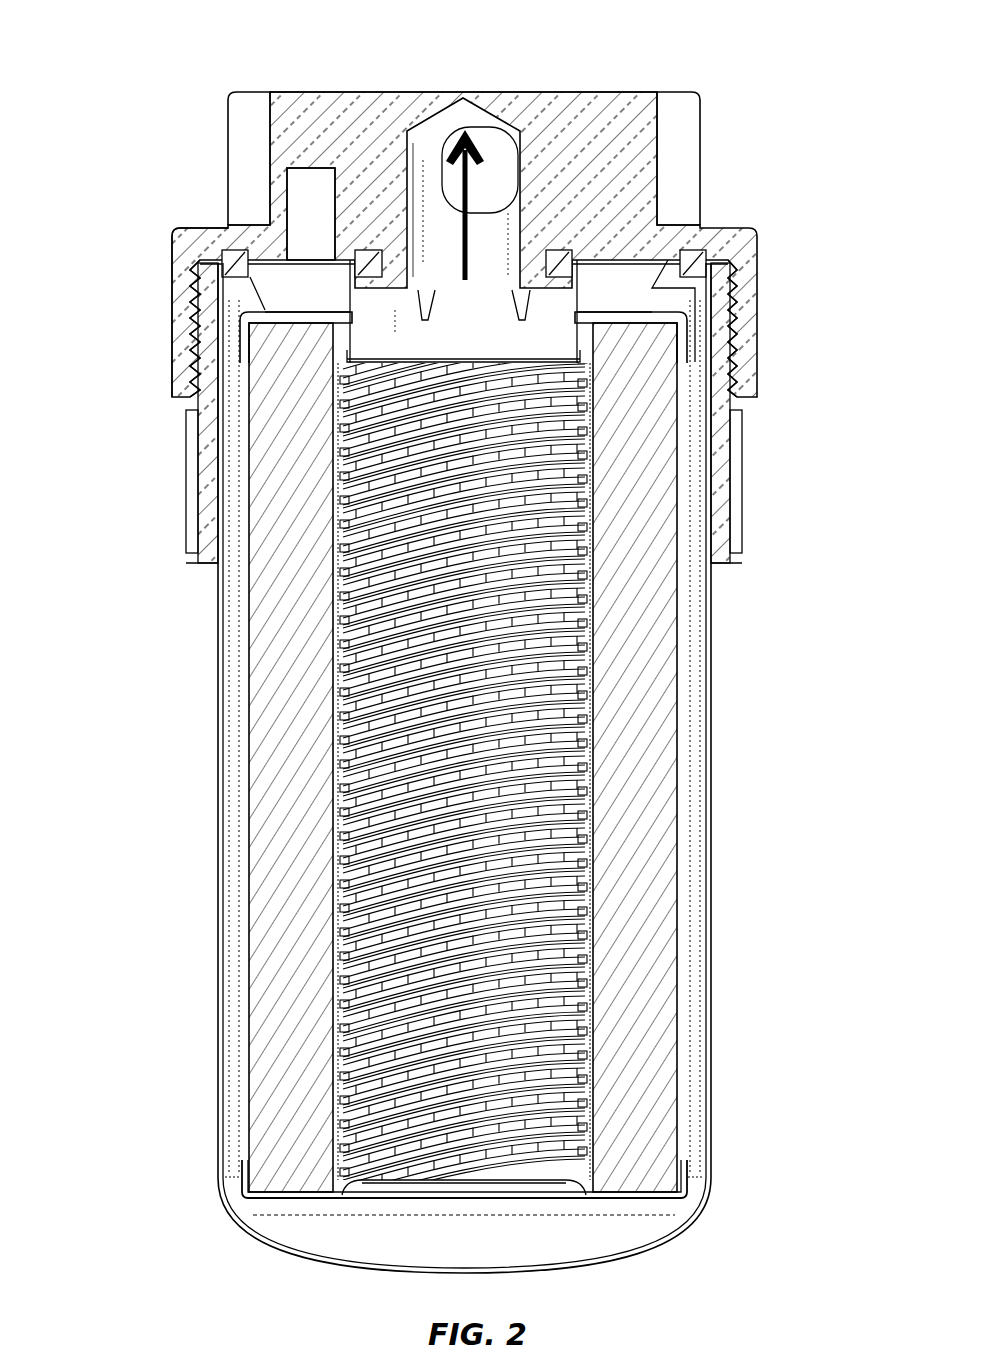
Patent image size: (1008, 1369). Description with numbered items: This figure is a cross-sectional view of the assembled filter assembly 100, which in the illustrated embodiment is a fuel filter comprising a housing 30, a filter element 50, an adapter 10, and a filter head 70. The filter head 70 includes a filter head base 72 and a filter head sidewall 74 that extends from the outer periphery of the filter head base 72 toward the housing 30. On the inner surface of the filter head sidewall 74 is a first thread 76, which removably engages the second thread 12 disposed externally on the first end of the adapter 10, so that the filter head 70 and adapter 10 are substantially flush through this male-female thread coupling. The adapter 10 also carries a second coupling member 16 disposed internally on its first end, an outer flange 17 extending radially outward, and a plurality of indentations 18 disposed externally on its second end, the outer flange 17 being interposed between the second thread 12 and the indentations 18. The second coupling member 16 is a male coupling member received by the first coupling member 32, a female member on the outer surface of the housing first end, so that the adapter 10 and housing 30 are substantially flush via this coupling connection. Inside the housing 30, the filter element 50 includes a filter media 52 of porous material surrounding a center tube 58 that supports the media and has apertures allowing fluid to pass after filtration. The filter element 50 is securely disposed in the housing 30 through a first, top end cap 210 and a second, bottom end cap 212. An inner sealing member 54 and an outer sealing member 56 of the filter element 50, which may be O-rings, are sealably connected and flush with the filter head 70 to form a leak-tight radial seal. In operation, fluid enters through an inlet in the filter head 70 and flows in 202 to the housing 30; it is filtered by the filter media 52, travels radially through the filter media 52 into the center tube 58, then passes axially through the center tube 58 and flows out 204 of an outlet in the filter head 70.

The adapter 10 is at (765, 488).
The second thread 12 is at (736, 368).
The second coupling member 16 is at (727, 270).
The outer flange 17 is at (742, 410).
The plurality of indentations 18 is at (190, 481).
The housing 30 is at (724, 880).
The first coupling member 32 is at (238, 292).
The filter element 50 is at (695, 718).
The filter media 52 is at (312, 977).
The inner sealing member 54 is at (558, 253).
The outer sealing member 56 is at (692, 258).
The center tube 58 is at (393, 712).
The filter head 70 is at (212, 137).
The filter head base 72 is at (238, 225).
The filter head sidewall 74 is at (185, 251).
The first thread 76 is at (190, 370).
The filter assembly 100 is at (754, 36).
The fluid inflow 202 is at (686, 382).
The filtered fluid outflow 204 is at (467, 267).
The first end cap 210 is at (240, 328).
The second end cap 212 is at (254, 1185).